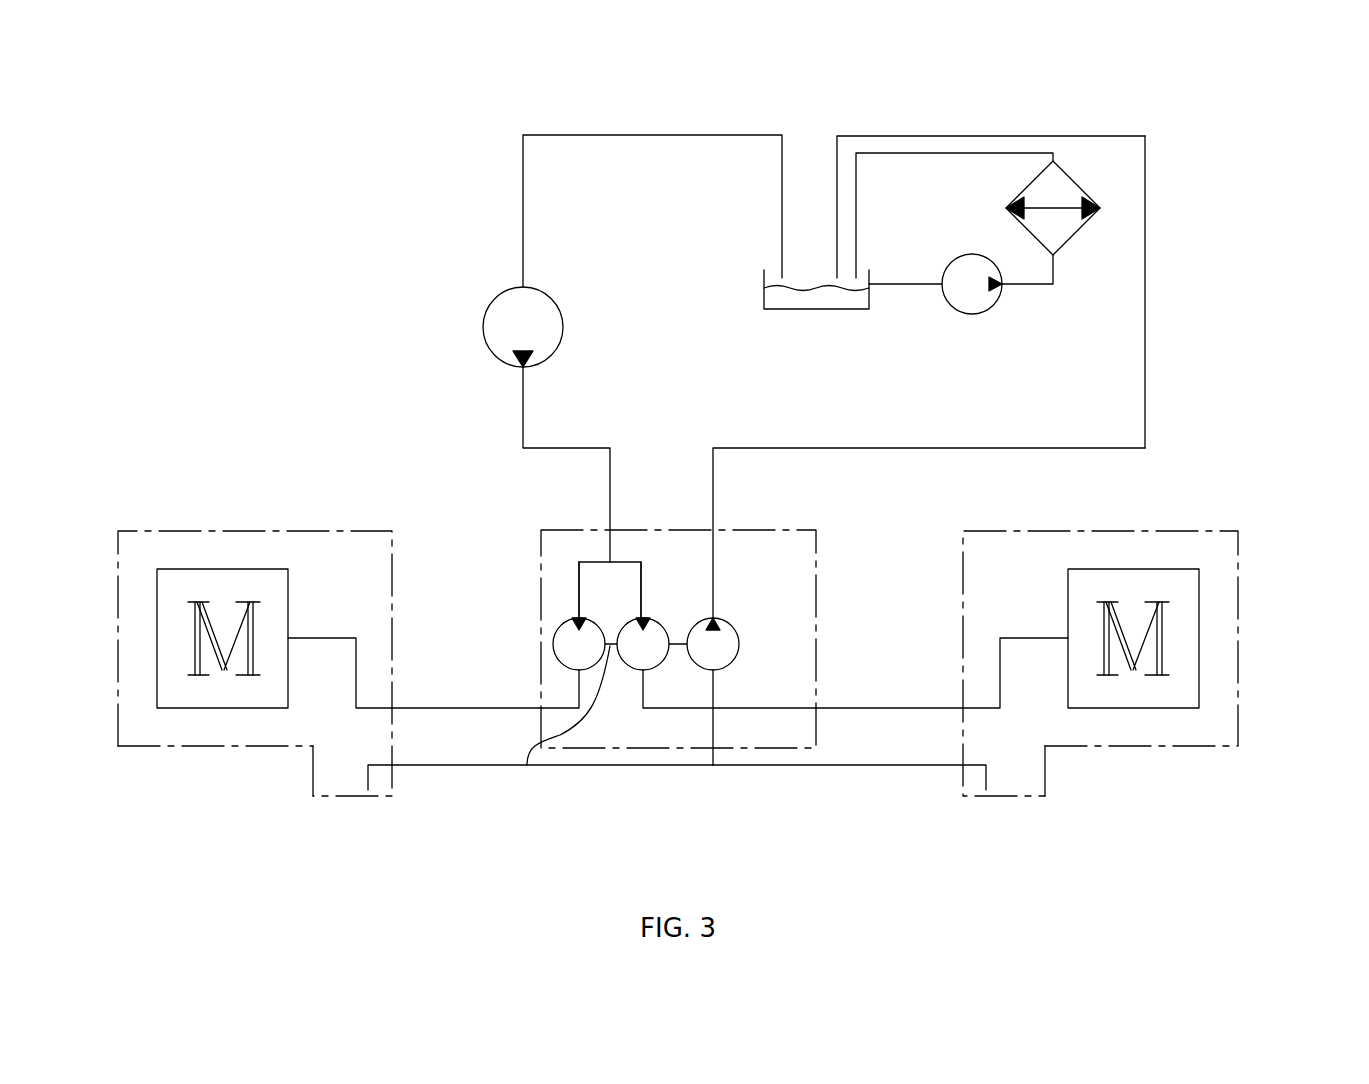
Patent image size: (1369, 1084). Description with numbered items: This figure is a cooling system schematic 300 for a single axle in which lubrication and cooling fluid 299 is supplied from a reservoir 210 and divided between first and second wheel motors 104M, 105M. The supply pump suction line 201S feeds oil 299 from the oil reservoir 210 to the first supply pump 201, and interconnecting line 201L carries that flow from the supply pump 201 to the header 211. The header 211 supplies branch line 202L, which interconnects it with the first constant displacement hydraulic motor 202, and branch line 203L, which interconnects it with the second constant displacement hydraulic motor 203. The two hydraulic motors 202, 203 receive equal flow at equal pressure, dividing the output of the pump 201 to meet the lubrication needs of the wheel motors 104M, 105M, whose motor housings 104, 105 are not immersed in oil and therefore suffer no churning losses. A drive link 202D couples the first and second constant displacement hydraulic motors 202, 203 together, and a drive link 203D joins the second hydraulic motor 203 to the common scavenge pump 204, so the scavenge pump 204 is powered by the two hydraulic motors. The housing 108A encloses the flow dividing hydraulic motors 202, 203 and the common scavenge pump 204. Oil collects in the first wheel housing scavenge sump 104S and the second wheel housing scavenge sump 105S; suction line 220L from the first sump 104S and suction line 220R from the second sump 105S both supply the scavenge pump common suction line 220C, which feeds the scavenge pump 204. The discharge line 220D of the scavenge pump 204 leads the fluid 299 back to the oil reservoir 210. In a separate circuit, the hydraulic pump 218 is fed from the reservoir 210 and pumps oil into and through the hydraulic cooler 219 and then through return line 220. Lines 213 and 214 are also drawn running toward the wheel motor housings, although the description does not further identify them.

The cooling system schematic 300 is at (1225, 115).
The supply pump 201 is at (512, 290).
The supply pump suction line 201S is at (523, 183).
The interconnecting line 201L is at (523, 423).
The oil reservoir 210 is at (765, 290).
The oil 299 is at (803, 285).
The return line 220 is at (955, 152).
The discharge line 220D is at (1145, 307).
The common suction line 220C is at (713, 718).
The suction line 220L is at (437, 767).
The suction line 220R is at (918, 767).
The hydraulic cooler 219 is at (1085, 198).
The hydraulic pump 218 is at (988, 308).
The housing 108A is at (798, 530).
The header 211 is at (593, 561).
The first constant displacement hydraulic motor 202 is at (553, 633).
The branch line 202L is at (577, 597).
The drive link 202D is at (527, 765).
The second constant displacement hydraulic motor 203 is at (657, 625).
The branch line 203L is at (642, 588).
The drive link 203D is at (677, 642).
The common scavenge pump 204 is at (737, 630).
The left supply line 213 is at (442, 706).
The right supply line 214 is at (910, 706).
The motor housing 104 is at (117, 667).
The first wheel motor 104M is at (172, 600).
The first wheel housing scavenge sump 104S is at (335, 797).
The motor housing 105 is at (1238, 655).
The second wheel motor 105M is at (1185, 590).
The second wheel housing scavenge sump 105S is at (1028, 796).